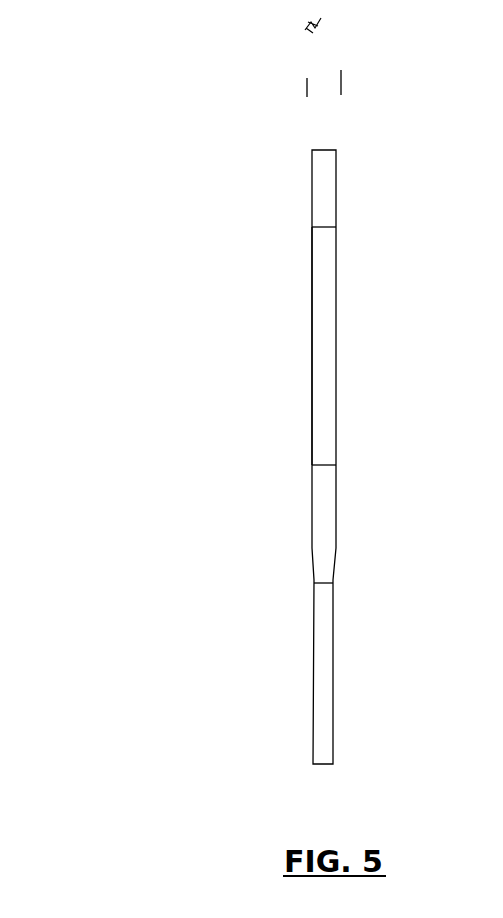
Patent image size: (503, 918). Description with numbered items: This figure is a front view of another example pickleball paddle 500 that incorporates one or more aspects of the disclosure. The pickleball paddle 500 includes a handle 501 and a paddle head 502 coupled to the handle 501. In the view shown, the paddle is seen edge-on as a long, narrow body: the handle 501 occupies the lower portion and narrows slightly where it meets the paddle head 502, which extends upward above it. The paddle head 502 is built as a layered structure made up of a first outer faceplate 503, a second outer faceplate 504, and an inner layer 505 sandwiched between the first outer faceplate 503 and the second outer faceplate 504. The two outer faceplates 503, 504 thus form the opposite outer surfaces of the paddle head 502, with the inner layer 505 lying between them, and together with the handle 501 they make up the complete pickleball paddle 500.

The pickleball paddle 500 is at (140, 178).
The handle 501 is at (333, 678).
The paddle head 502 is at (352, 362).
The first outer faceplate 503 is at (310, 297).
The second outer faceplate 504 is at (336, 307).
The inner layer 505 is at (326, 146).